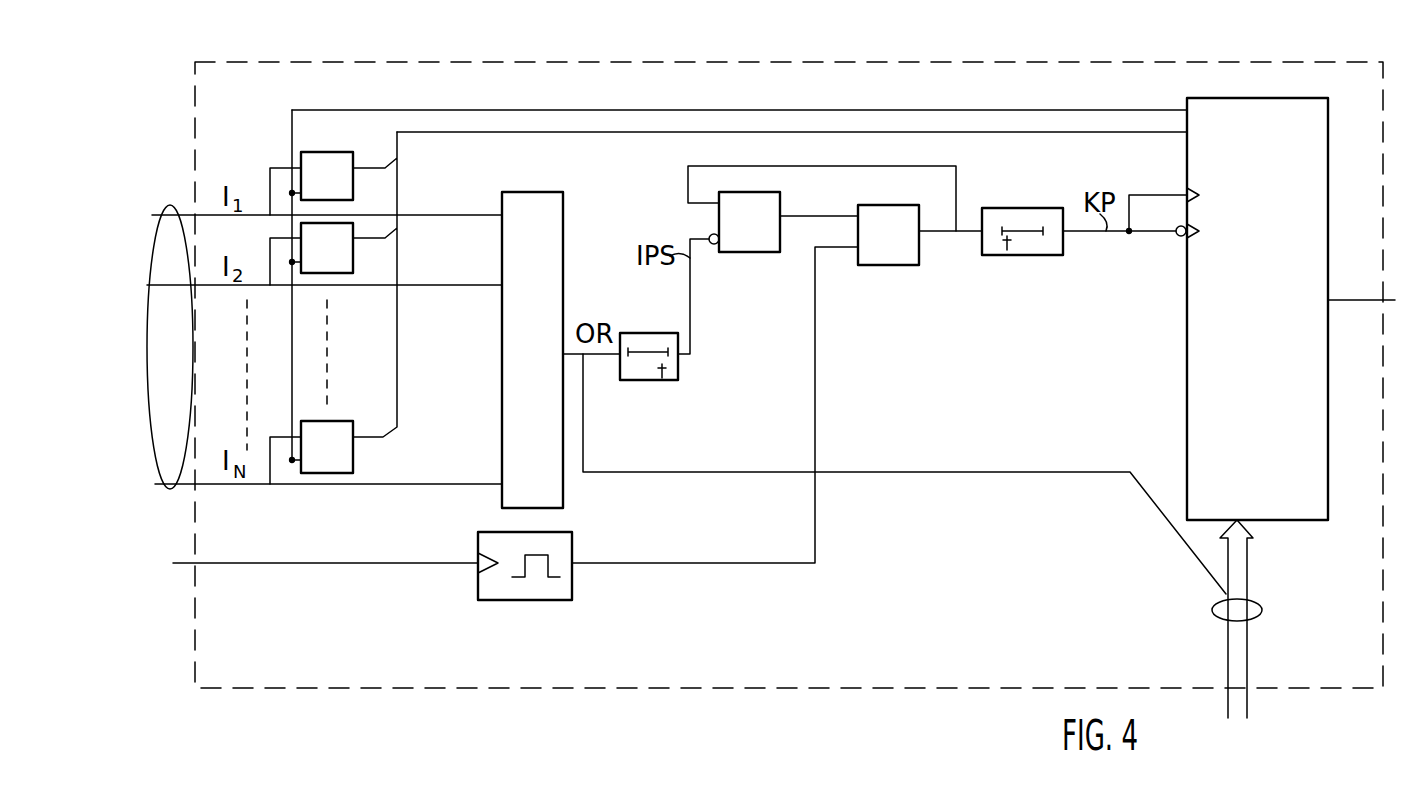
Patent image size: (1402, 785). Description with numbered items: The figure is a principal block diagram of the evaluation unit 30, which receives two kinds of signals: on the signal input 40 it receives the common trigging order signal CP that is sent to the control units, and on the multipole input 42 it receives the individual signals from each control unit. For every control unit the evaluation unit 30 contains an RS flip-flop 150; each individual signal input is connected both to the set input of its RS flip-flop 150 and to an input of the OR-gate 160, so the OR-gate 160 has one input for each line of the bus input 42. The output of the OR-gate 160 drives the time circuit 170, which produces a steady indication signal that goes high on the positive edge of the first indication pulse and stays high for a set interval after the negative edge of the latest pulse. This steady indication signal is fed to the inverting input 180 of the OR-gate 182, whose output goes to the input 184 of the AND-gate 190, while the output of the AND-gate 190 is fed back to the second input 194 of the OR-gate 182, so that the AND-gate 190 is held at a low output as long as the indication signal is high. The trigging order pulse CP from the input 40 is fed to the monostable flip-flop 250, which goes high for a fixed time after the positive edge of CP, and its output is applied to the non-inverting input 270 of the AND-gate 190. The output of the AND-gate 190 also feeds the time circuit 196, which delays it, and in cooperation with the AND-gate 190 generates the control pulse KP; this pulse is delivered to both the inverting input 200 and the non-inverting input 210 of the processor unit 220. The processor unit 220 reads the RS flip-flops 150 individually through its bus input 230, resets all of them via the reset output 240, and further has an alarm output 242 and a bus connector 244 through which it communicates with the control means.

The evaluation unit 30 is at (620, 688).
The signal input 40 is at (190, 563).
The multipole input 42 is at (170, 207).
The RS flip-flop 150 is at (321, 152).
The OR-gate 160 is at (565, 209).
The time circuit 170 is at (640, 333).
The inverting input 180 is at (712, 245).
The OR-gate 182 is at (755, 252).
The input 184 is at (858, 214).
The AND-gate 190 is at (890, 265).
The second input 194 is at (719, 201).
The time circuit 196 is at (1008, 208).
The inverting input 200 is at (1178, 240).
The non-inverting input 210 is at (1187, 194).
The processor unit 220 is at (1285, 294).
The bus input 230 is at (1187, 133).
The reset output 240 is at (1187, 108).
The alarm output 242 is at (1330, 302).
The bus connector 244 is at (1262, 612).
The monostable flip-flop 250 is at (572, 535).
The non-inverting input 270 is at (859, 250).